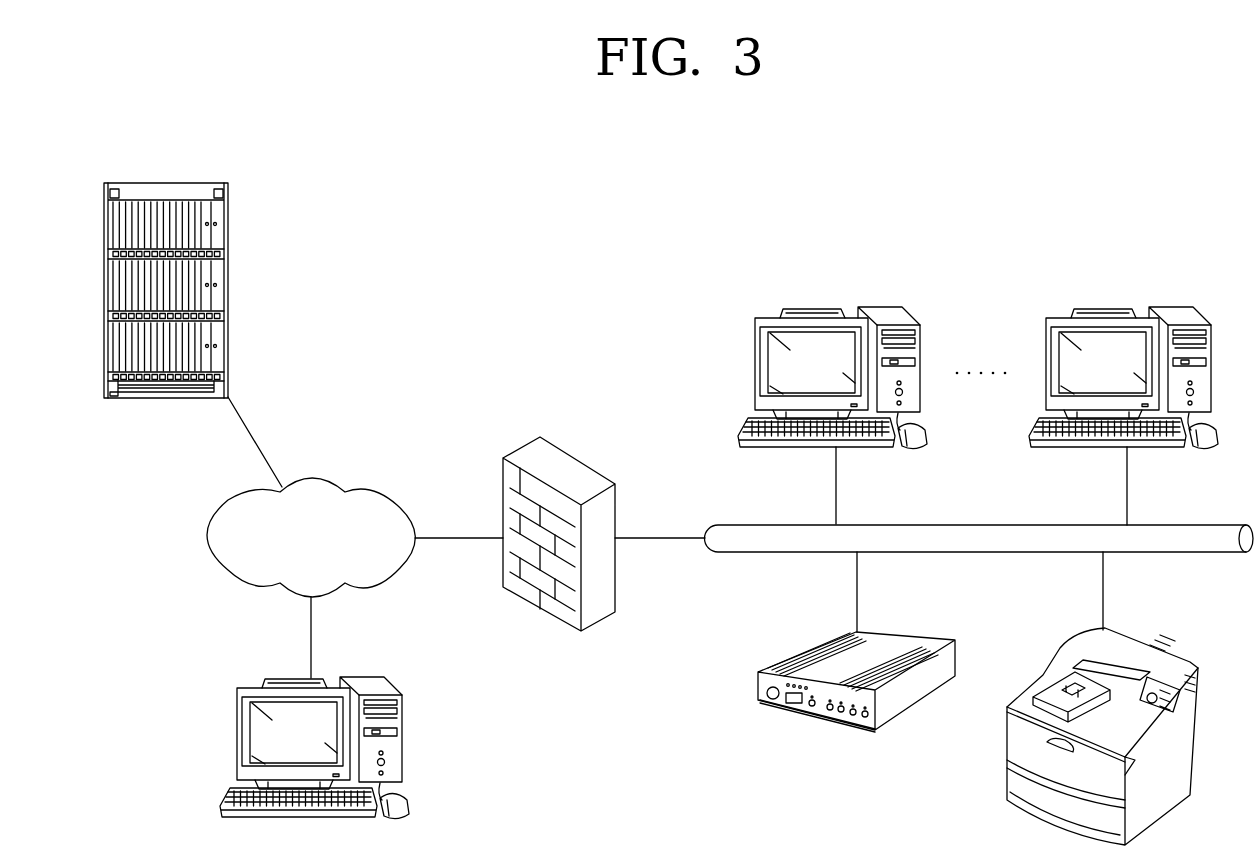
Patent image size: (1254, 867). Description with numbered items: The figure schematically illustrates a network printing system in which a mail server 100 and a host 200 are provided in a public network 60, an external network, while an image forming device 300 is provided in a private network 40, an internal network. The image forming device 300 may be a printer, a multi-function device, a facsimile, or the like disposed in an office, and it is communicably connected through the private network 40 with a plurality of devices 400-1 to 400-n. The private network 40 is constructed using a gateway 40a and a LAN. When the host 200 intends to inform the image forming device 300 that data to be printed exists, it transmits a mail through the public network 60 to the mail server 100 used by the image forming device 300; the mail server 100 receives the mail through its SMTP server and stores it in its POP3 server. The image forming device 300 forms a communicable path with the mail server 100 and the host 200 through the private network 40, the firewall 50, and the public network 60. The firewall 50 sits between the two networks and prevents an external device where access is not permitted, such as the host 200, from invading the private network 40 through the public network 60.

The mail server 100 is at (229, 184).
The public network 60 is at (376, 490).
The firewall 50 is at (578, 460).
The private network 40 is at (1218, 525).
The device 400-1 is at (890, 307).
The device 400-n is at (1182, 307).
The host 200 is at (372, 676).
The gateway 40a is at (902, 632).
The image forming device 300 is at (1148, 640).